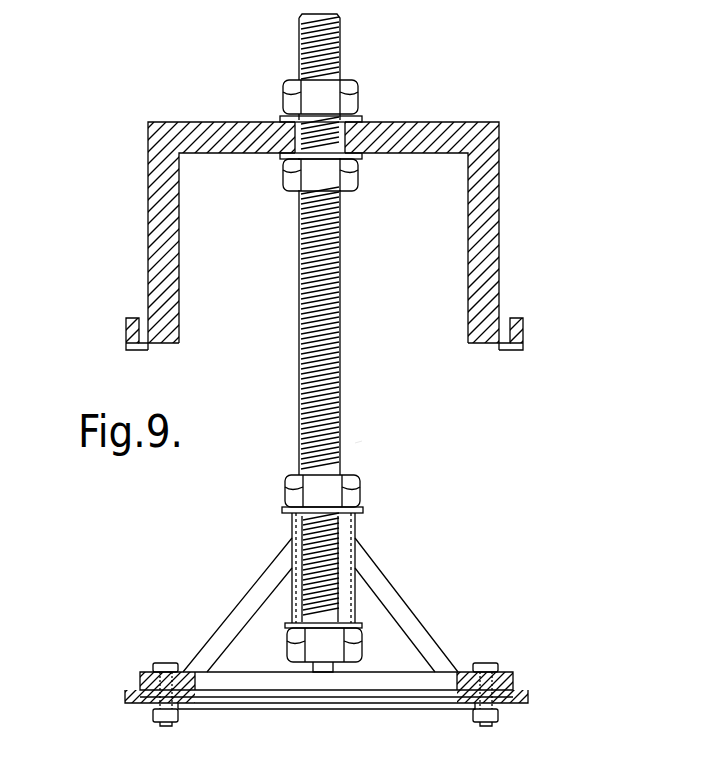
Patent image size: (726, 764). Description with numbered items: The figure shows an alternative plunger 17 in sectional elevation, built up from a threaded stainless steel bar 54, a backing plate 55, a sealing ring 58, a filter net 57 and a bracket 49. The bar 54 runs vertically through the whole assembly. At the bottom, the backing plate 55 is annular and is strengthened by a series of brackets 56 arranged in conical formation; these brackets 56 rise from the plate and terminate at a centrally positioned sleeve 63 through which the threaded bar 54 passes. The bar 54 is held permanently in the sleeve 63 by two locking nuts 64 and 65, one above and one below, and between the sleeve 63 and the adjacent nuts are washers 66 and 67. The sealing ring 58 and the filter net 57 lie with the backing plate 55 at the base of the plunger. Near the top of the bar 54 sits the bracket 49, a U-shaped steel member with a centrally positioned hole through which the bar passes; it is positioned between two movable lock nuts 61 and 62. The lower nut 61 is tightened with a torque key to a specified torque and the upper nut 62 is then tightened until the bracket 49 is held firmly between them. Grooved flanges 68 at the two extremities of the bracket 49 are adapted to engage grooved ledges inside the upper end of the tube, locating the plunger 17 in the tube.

The plunger 17 is at (355, 443).
The bracket 49 is at (492, 264).
The threaded stainless steel bar 54 is at (300, 320).
The backing plate 55 is at (487, 664).
The brackets 56 is at (408, 597).
The filter net 57 is at (418, 706).
The sealing ring 58 is at (530, 697).
The lower lock nut 61 is at (358, 177).
The upper lock nut 62 is at (283, 97).
The sleeve 63 is at (360, 530).
The locking nut 64 is at (290, 645).
The locking nut 65 is at (285, 492).
The washer 66 is at (362, 630).
The washer 67 is at (285, 513).
The grooved flanges 68 is at (128, 340).